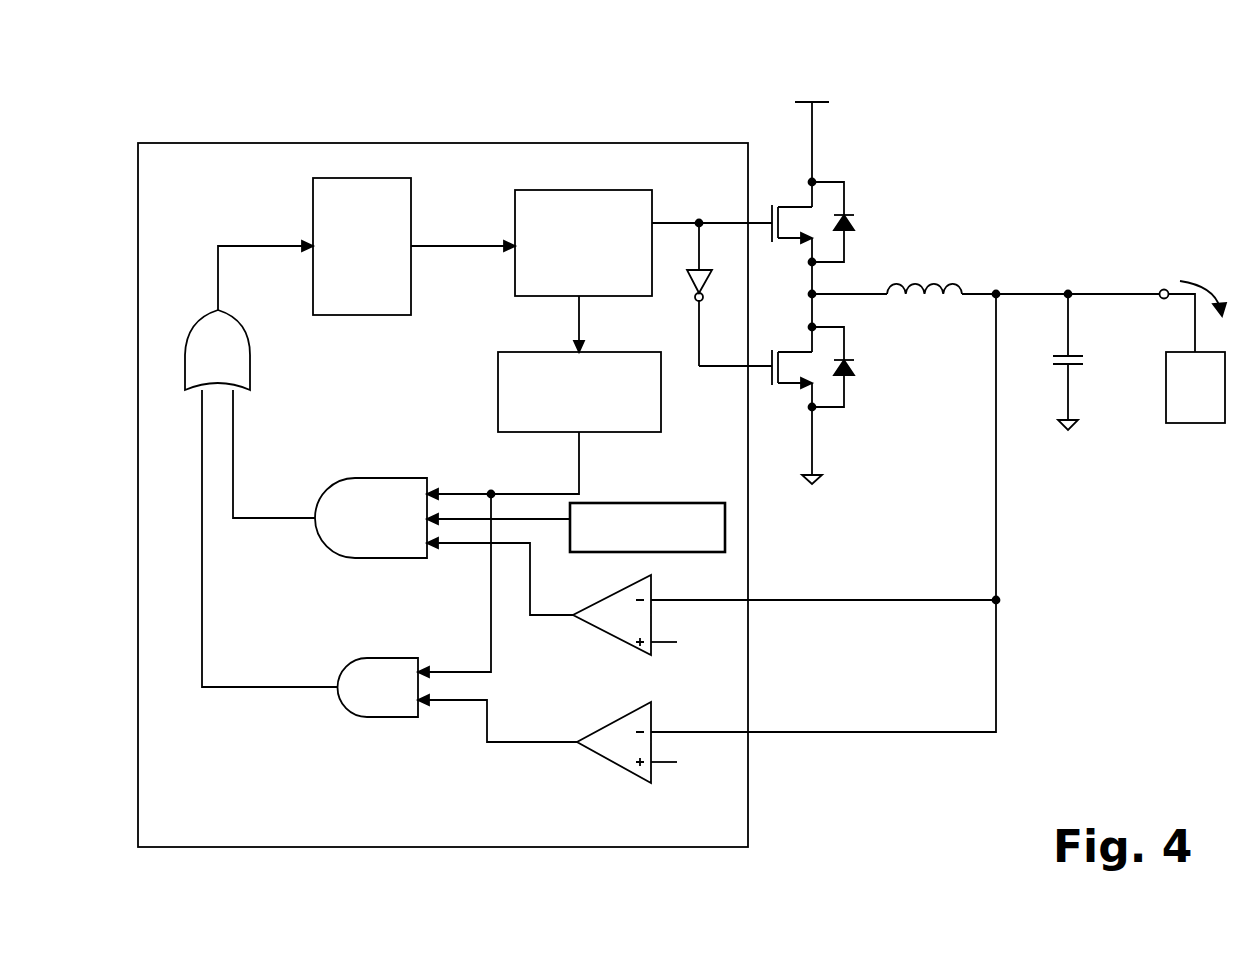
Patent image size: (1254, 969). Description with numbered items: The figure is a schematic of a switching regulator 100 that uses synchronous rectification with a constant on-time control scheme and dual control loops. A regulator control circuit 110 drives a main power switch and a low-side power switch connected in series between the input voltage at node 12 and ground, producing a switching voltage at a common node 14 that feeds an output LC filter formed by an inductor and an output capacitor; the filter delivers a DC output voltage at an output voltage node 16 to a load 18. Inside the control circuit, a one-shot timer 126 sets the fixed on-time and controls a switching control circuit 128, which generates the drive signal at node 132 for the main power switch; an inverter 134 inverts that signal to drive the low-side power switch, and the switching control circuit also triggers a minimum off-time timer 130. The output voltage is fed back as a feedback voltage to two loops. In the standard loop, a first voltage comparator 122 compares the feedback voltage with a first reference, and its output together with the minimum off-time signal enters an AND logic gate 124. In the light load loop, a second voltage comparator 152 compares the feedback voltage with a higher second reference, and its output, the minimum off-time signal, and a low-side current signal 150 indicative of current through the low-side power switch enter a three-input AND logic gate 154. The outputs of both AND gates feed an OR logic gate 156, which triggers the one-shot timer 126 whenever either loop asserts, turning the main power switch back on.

The switching regulator 100 is at (962, 90).
The regulator control circuit 110 is at (660, 143).
The input voltage node 12 is at (827, 104).
The common node 14 is at (814, 297).
The output voltage node 16 is at (994, 297).
The load 18 is at (1196, 423).
The first voltage comparator 122 is at (598, 754).
The AND logic gate 124 is at (404, 717).
The one-shot timer 126 is at (314, 246).
The switching control circuit 128 is at (531, 271).
The minimum off-time timer 130 is at (541, 514).
The drive signal node 132 is at (686, 223).
The inverter 134 is at (703, 297).
The low-side current signal 150 is at (663, 503).
The second voltage comparator 152 is at (592, 624).
The AND logic gate 154 is at (384, 558).
The OR logic gate 156 is at (250, 366).